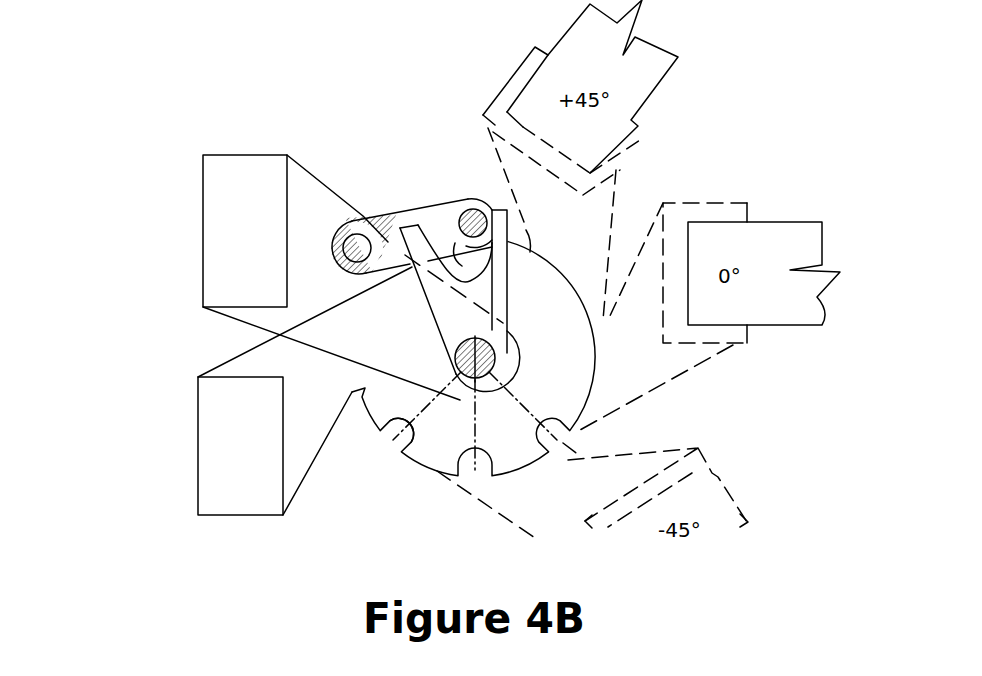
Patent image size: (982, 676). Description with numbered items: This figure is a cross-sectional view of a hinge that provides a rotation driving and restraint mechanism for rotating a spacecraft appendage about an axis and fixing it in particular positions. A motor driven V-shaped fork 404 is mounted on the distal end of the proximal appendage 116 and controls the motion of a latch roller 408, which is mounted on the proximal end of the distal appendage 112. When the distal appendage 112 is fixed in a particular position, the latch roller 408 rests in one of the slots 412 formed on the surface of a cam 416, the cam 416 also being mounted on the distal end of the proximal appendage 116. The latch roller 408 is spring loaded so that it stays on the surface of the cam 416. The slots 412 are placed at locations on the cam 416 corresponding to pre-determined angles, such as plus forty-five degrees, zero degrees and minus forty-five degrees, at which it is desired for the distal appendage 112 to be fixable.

The distal appendage 112 is at (243, 220).
The proximal appendage 116 is at (243, 450).
The motor driven V-shaped fork 404 is at (493, 273).
The latch roller 408 is at (470, 213).
The slots 412 is at (550, 443).
The cam 416 is at (405, 447).